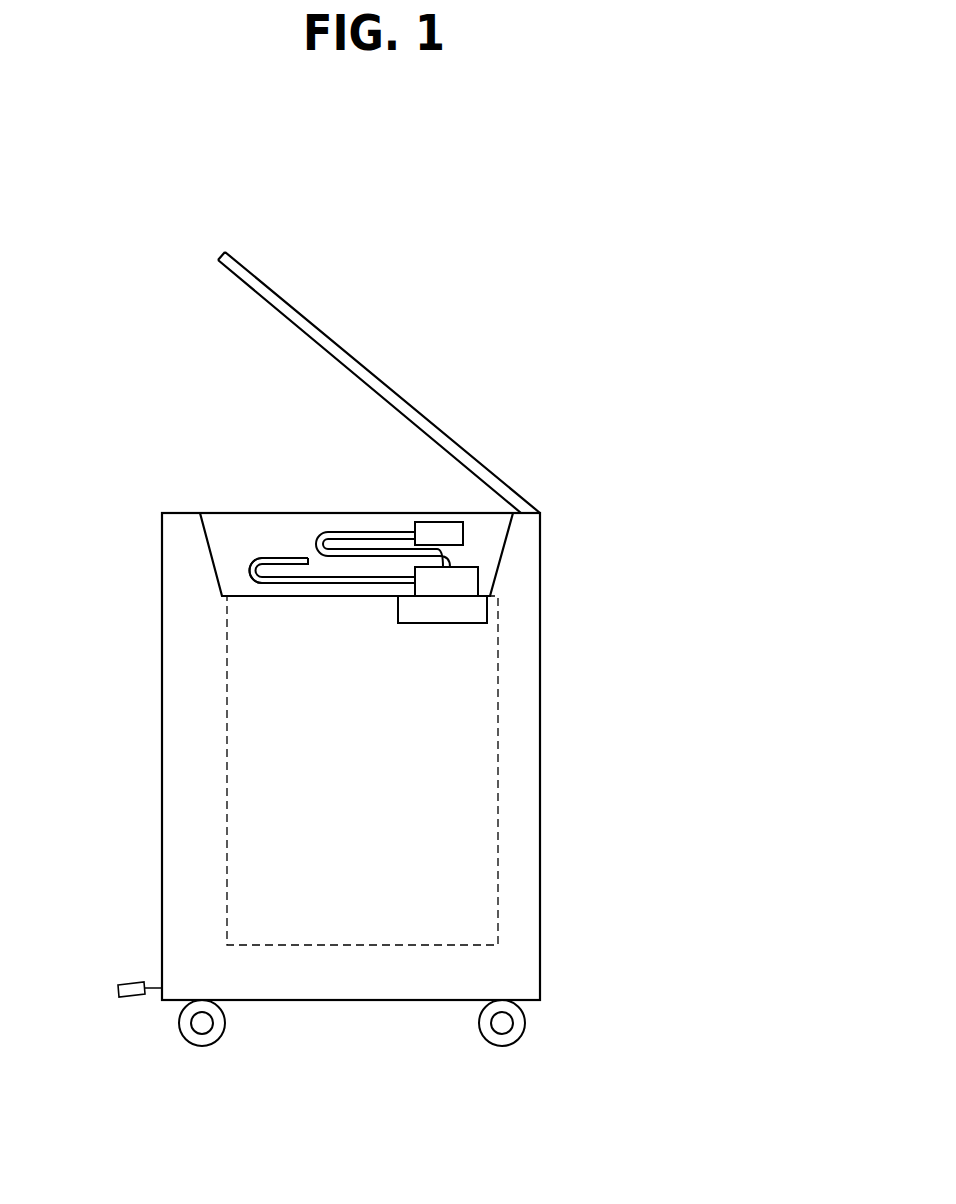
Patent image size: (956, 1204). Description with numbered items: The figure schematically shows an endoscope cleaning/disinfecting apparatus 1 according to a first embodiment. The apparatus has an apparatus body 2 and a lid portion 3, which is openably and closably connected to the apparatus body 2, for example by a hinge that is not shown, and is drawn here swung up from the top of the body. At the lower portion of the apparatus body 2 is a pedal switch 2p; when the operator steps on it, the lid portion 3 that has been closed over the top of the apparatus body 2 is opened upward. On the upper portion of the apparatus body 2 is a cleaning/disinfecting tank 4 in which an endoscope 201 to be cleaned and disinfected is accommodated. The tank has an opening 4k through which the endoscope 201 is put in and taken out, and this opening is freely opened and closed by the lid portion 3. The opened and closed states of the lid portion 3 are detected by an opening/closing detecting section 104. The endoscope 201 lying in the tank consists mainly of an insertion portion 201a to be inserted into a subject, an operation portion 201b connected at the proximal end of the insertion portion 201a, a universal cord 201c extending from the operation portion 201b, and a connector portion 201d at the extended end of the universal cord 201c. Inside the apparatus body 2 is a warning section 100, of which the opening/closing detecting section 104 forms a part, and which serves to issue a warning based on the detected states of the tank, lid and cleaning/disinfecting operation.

The endoscope cleaning/disinfecting apparatus 1 is at (645, 436).
The apparatus body 2 is at (527, 838).
The pedal switch 2p is at (128, 998).
The lid portion 3 is at (385, 383).
The cleaning/disinfecting tank 4 is at (247, 598).
The opening 4k is at (282, 513).
The warning section 100 is at (498, 745).
The opening/closing detecting section 104 is at (447, 617).
The endoscope 201 is at (307, 591).
The insertion portion 201a is at (345, 583).
The operation portion 201b is at (467, 582).
The universal cord 201c is at (373, 532).
The connector portion 201d is at (463, 535).